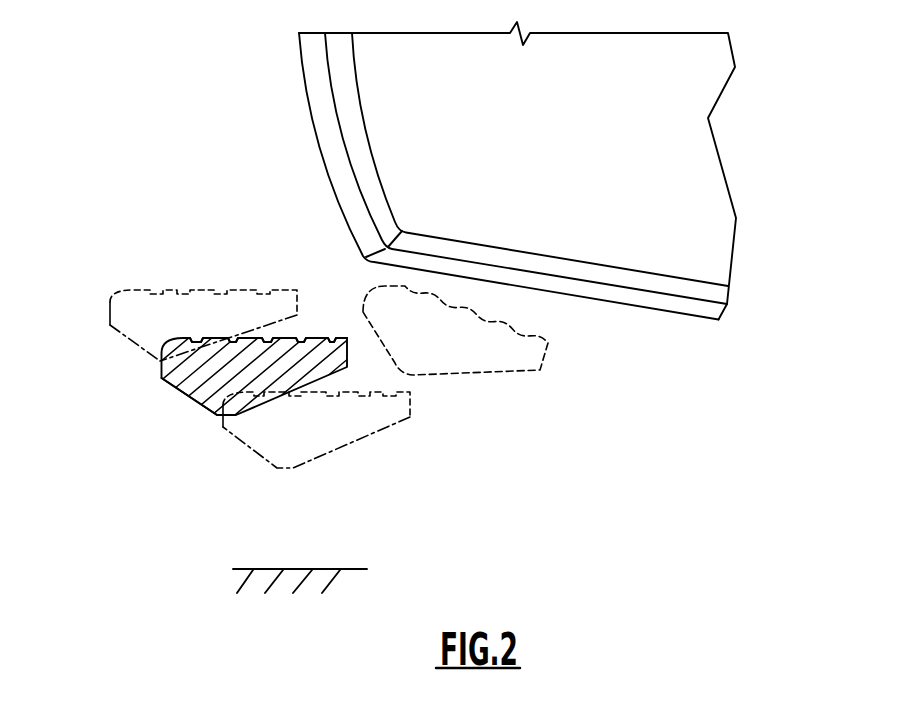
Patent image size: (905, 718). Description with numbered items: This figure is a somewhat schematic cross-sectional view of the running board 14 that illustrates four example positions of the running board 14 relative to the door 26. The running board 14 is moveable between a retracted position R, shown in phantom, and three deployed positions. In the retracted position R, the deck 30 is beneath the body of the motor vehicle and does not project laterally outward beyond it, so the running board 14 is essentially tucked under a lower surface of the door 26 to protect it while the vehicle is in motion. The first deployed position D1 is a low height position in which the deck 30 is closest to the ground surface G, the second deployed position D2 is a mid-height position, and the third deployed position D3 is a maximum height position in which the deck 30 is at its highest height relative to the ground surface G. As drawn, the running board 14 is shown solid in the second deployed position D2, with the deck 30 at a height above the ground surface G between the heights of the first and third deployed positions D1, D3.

The door 26 is at (305, 100).
The running board 14 is at (148, 367).
The deck 30 is at (245, 337).
The first deployed position D1 is at (241, 456).
The second deployed position D2 is at (166, 409).
The third deployed position D3 is at (95, 283).
The retracted position R is at (345, 290).
The ground surface G is at (270, 569).